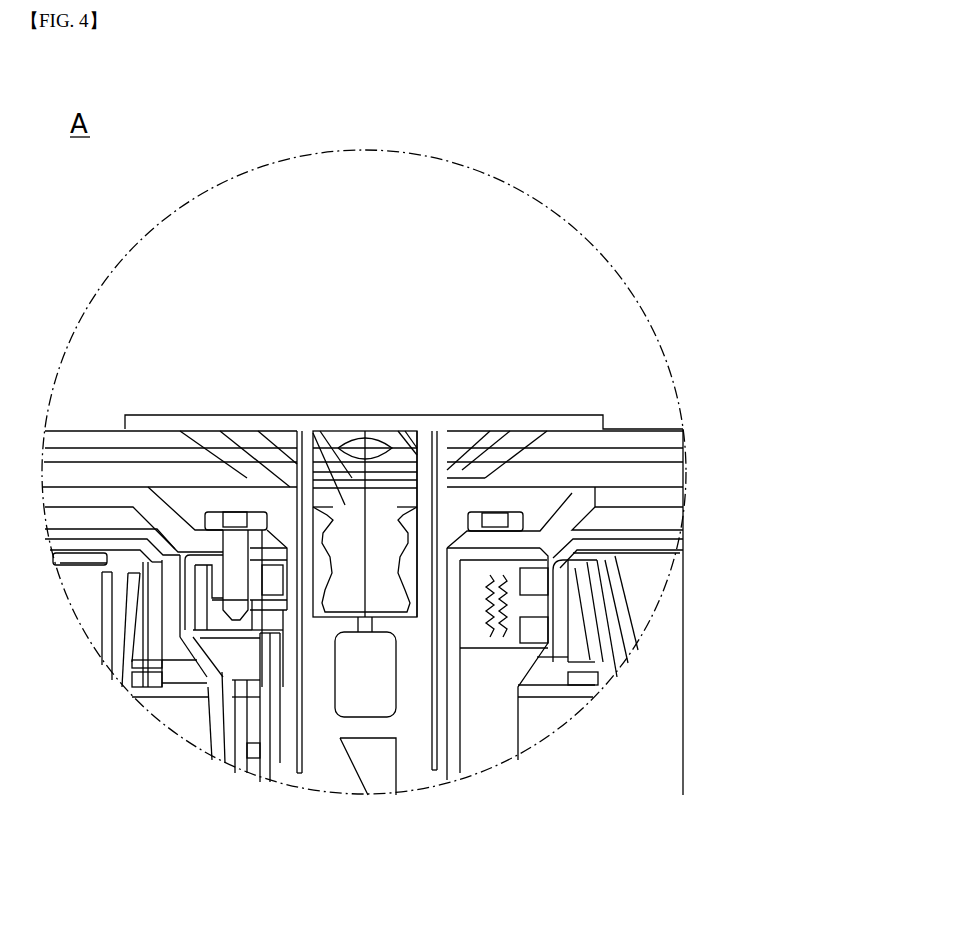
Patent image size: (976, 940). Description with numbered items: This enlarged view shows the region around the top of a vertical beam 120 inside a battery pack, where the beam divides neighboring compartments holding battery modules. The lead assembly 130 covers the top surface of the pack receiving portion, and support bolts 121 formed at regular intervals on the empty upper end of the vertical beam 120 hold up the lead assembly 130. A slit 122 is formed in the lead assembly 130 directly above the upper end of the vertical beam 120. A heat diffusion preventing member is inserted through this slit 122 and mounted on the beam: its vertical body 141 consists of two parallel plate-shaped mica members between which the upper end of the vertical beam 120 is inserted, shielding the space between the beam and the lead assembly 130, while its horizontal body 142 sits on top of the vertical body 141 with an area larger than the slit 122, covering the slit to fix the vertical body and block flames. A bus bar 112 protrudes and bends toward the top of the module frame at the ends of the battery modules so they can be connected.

The bus bar 112 is at (665, 495).
The vertical beam 120 is at (345, 760).
The support bolt 121 is at (325, 431).
The slit 122 is at (422, 431).
The lead assembly 130 is at (652, 428).
The vertical body 141 is at (298, 760).
The horizontal body 142 is at (498, 415).